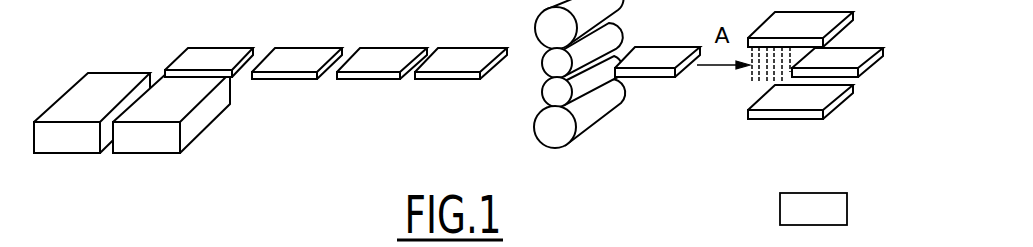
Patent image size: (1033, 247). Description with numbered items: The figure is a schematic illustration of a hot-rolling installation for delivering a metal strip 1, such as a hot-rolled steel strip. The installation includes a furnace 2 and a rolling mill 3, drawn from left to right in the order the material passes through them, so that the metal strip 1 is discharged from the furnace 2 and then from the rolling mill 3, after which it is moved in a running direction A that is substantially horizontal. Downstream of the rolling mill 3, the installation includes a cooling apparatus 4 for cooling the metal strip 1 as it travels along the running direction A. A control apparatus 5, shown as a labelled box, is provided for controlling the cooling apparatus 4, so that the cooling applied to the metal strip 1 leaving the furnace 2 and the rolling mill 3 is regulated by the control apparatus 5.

The metal strip 1 is at (653, 78).
The furnace 2 is at (153, 142).
The rolling mill 3 is at (580, 153).
The cooling apparatus 4 is at (775, 128).
The control apparatus 5 is at (813, 209).